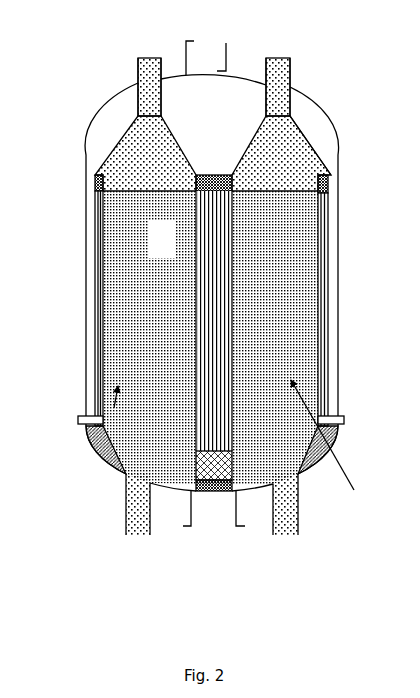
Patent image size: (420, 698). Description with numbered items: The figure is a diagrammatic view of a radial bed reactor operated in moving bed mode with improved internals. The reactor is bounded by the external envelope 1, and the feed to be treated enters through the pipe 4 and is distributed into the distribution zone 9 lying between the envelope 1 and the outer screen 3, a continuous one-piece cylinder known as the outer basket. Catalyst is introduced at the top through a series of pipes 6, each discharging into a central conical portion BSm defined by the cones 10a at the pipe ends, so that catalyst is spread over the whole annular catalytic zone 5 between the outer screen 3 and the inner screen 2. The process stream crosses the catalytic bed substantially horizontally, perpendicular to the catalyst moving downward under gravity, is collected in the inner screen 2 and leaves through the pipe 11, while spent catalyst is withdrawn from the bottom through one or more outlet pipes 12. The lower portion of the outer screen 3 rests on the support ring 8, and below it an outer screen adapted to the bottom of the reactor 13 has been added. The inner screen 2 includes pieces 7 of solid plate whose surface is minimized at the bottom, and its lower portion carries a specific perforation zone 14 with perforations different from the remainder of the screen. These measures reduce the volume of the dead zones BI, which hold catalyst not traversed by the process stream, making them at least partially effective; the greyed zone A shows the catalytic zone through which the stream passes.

The external envelope 1 is at (78, 172).
The inner screen 2 is at (200, 248).
The outer screen 3 is at (92, 302).
The pipe 4 is at (218, 50).
The annular catalytic zone 5 is at (140, 352).
The pipes 6 is at (270, 75).
The pieces of solid plate 7 is at (208, 162).
The solid support ring 8 is at (75, 412).
The distribution zone 9 is at (325, 275).
The cones 10a is at (290, 125).
The pipe 11 is at (209, 507).
The outlet pipes 12 is at (287, 515).
The outer screen adapted to the bottom of the reactor 13 is at (85, 440).
The specific perforation zone 14 is at (170, 480).
The central conical portion BSm is at (140, 140).
The dead zones BI is at (166, 482).
The catalytic zone A is at (106, 410).